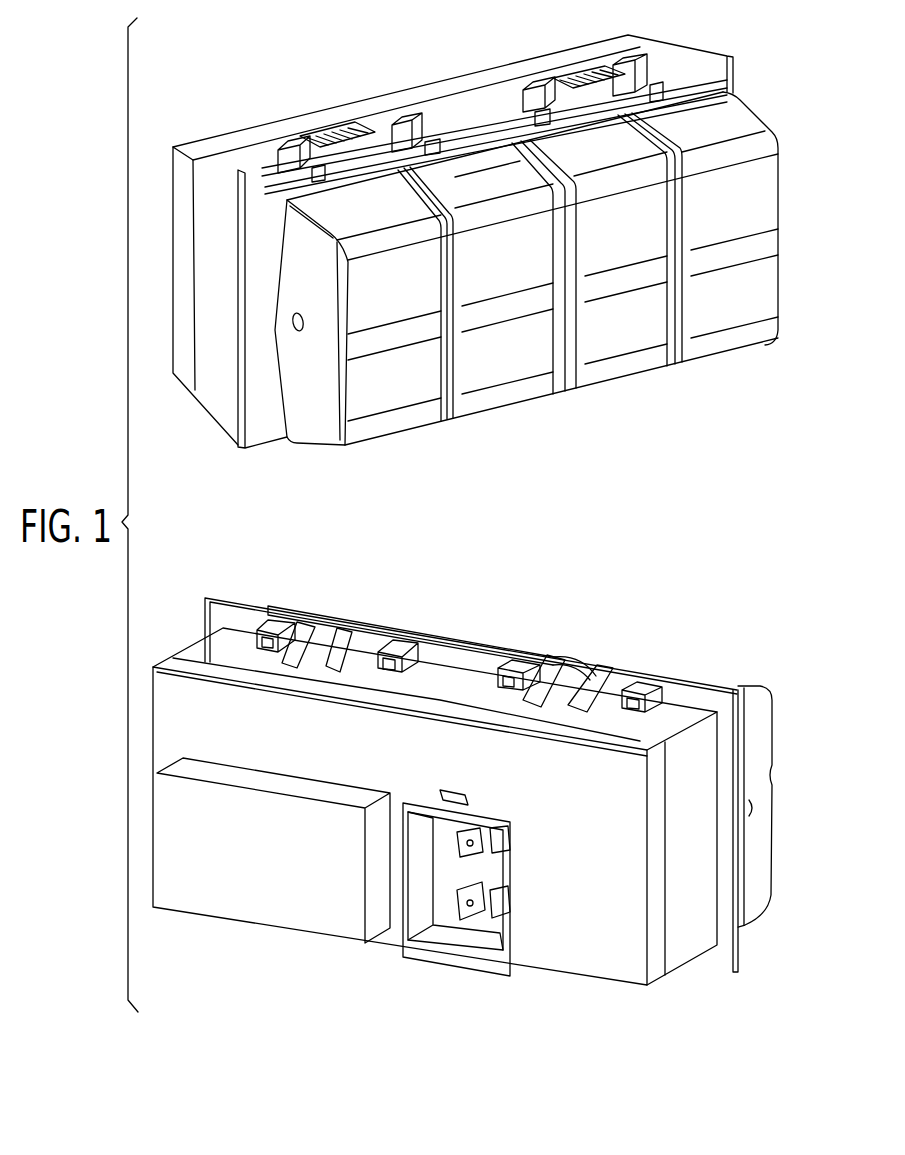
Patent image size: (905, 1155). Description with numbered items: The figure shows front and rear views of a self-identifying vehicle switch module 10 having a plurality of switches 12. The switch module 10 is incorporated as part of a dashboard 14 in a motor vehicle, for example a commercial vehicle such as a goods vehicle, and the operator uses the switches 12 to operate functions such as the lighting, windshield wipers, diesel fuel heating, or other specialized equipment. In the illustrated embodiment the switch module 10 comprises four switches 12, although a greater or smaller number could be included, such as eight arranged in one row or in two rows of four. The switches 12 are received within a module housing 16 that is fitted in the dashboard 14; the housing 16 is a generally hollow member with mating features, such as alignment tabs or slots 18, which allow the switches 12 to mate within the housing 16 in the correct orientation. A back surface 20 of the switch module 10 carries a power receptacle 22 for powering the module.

The switch module 10 is at (757, 78).
The switches 12 is at (507, 403).
The dashboard 14 is at (569, 527).
The module housing 16 is at (257, 118).
The alignment tabs or slots 18 is at (453, 145).
The back surface 20 is at (160, 690).
The power receptacle 22 is at (473, 920).